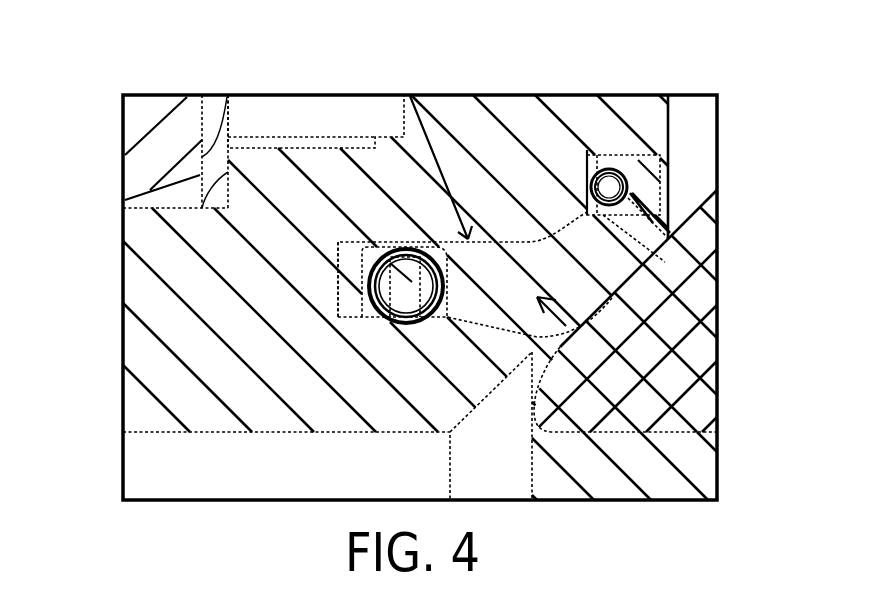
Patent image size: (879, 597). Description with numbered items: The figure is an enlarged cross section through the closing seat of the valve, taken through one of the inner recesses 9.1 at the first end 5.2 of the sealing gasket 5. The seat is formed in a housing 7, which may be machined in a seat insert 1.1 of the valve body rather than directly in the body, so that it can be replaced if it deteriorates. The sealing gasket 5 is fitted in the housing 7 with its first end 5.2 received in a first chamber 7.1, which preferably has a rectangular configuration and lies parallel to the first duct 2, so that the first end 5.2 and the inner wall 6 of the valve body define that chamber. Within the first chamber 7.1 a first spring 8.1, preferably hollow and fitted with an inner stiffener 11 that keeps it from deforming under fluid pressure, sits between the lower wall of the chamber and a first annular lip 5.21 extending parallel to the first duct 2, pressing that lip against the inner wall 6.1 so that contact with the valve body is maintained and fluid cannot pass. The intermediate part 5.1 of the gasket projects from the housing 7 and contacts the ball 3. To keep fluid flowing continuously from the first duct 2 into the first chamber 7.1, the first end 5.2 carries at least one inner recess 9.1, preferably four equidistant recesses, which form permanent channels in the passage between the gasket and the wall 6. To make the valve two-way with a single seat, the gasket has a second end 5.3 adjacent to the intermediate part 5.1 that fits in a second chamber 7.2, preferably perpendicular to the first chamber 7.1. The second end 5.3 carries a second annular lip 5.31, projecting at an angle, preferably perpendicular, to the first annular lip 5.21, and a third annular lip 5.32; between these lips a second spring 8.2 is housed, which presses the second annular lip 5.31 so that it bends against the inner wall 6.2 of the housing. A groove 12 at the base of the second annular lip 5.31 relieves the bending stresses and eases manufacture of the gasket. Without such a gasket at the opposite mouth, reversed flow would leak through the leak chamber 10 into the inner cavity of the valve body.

The seat insert 1.1 is at (283, 187).
The first duct 2 is at (187, 458).
The ball 3 is at (612, 397).
The sealing gasket 5 is at (645, 434).
The intermediate part 5.1 is at (606, 266).
The first end 5.2 is at (458, 289).
The first annular lip 5.21 is at (383, 250).
The second end 5.3 is at (632, 194).
The second annular lip 5.31 is at (586, 152).
The third annular lip 5.32 is at (632, 165).
The inner wall 6 is at (514, 262).
The inner wall 6.1 is at (343, 237).
The inner wall 6.2 is at (599, 153).
The housing 7 is at (453, 257).
The first chamber 7.1 is at (338, 277).
The second chamber 7.2 is at (614, 153).
The first spring 8.1 is at (375, 304).
The second spring 8.2 is at (628, 189).
The inner recess 9.1 is at (521, 338).
The leak chamber 10 is at (692, 120).
The inner stiffener 11 is at (408, 278).
The groove 12 is at (648, 224).